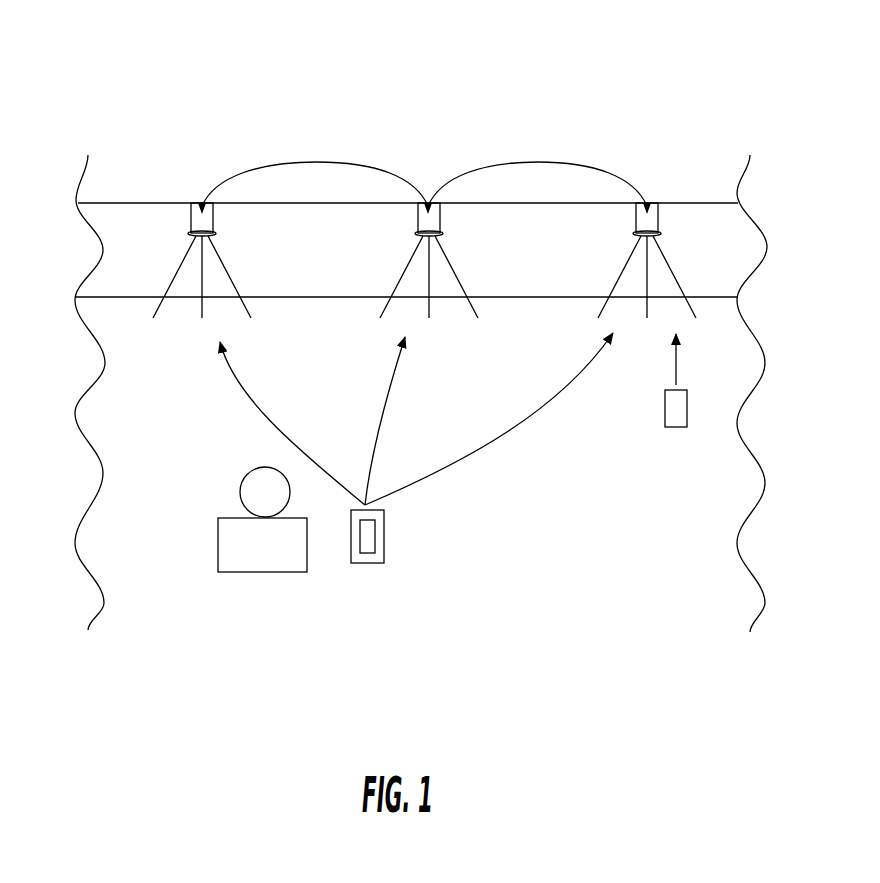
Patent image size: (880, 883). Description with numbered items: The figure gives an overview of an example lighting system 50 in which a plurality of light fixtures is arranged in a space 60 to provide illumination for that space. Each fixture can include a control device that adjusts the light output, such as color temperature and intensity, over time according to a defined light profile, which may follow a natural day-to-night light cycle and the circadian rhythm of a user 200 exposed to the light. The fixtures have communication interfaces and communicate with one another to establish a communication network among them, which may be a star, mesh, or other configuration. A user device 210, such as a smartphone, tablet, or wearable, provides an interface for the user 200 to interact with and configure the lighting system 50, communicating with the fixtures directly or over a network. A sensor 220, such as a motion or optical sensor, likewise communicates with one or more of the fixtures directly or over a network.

The lighting system 50 is at (223, 79).
The space 60 is at (127, 400).
The user 200 is at (261, 573).
The user device 210 is at (368, 564).
The sensor 220 is at (674, 428).